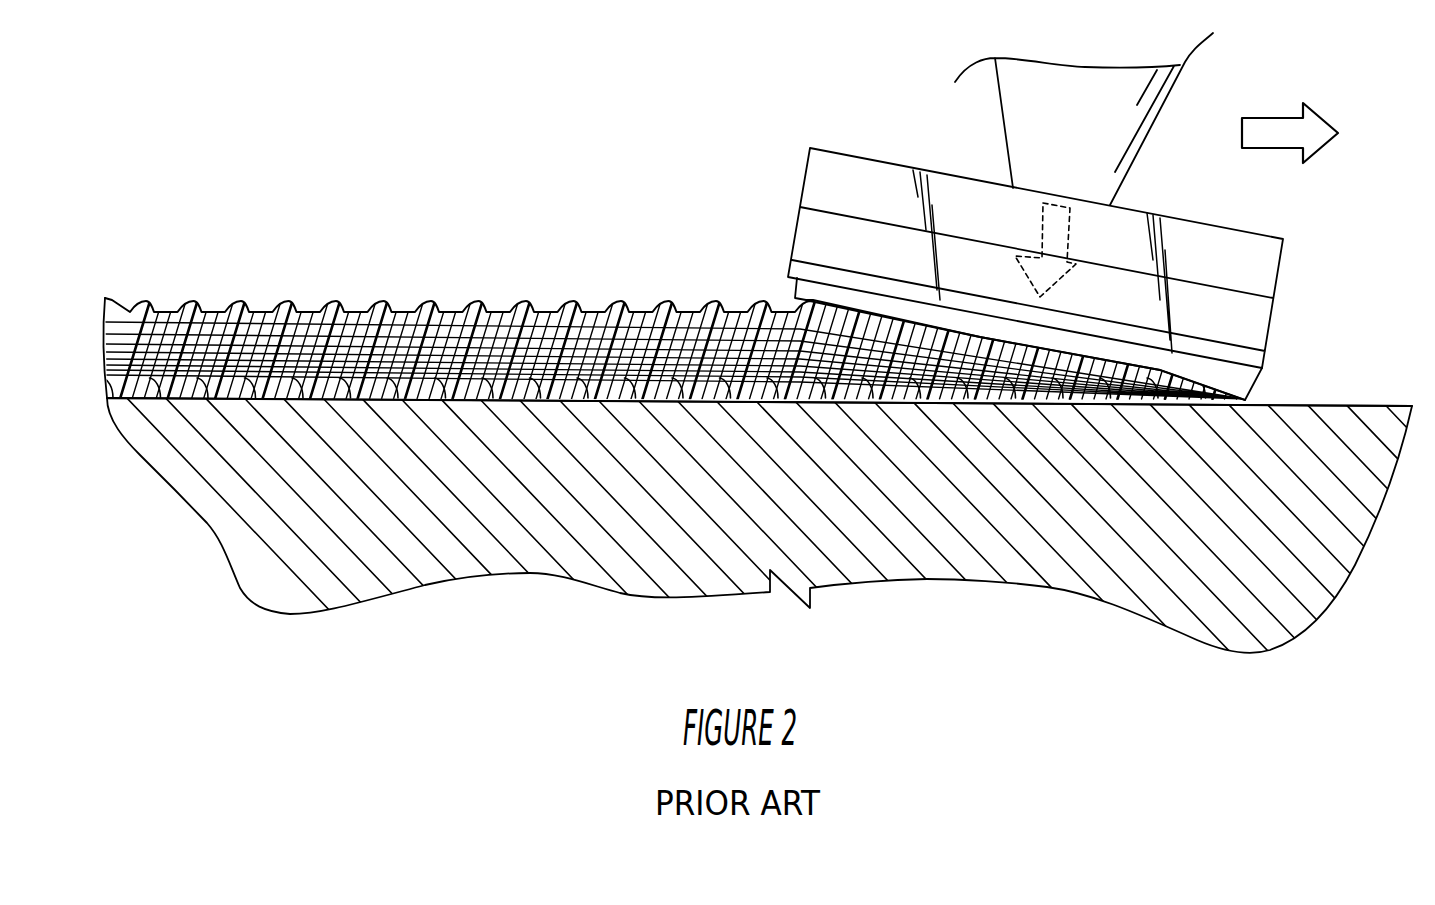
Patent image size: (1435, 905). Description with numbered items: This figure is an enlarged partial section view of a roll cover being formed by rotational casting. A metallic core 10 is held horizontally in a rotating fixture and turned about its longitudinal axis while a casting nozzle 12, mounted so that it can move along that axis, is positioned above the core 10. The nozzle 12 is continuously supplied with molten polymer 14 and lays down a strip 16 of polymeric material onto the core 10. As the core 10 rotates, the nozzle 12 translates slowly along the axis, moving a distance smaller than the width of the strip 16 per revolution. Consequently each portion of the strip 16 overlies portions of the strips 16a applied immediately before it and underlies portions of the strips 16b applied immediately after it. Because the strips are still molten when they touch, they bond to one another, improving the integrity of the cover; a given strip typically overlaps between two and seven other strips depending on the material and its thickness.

The metallic core 10 is at (1320, 440).
The casting nozzle 12 is at (1112, 150).
The molten polymer 14 is at (1238, 359).
The strip of polymeric material 16 is at (672, 307).
The preceding strips 16a is at (620, 303).
The succeeding strips 16b is at (797, 300).